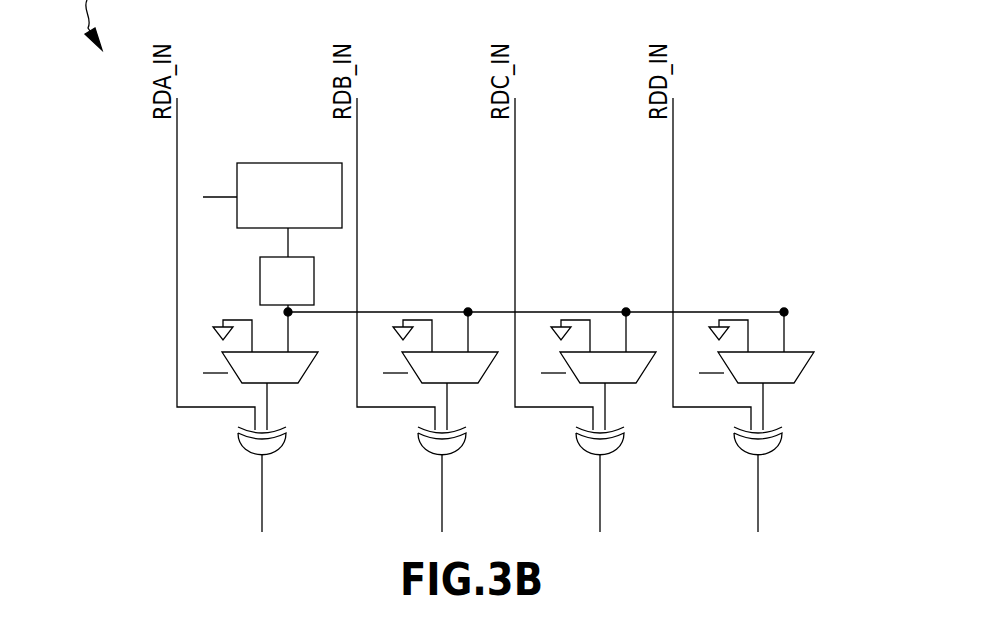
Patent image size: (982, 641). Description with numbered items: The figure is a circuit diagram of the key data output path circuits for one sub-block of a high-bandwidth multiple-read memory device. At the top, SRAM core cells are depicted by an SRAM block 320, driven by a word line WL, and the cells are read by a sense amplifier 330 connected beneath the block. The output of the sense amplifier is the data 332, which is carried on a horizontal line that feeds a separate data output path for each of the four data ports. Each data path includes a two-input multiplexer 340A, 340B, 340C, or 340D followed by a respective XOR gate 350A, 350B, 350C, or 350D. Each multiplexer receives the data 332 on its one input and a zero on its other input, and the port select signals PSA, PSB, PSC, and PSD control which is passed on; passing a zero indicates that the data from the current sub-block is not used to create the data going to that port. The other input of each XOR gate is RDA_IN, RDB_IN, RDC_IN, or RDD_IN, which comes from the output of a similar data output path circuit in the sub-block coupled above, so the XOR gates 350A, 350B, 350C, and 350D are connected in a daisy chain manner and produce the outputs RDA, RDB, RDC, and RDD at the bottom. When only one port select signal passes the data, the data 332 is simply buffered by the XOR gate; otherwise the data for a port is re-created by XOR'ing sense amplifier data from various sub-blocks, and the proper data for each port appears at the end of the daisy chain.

The SRAM block 320 is at (278, 163).
The sense amplifier 330 is at (260, 283).
The data 332 is at (328, 341).
The two-input multiplexer 340A is at (298, 383).
The two-input multiplexer 340B is at (455, 375).
The two-input multiplexer 340C is at (613, 375).
The two-input multiplexer 340D is at (771, 375).
The XOR gate 350A is at (282, 447).
The XOR gate 350B is at (471, 457).
The XOR gate 350C is at (629, 457).
The XOR gate 350D is at (787, 457).